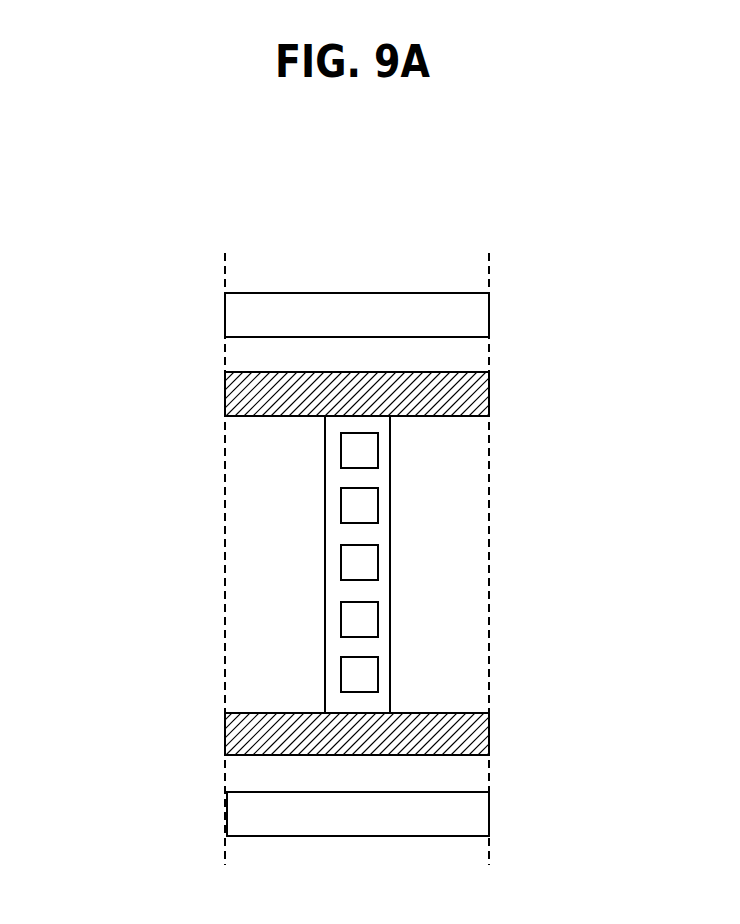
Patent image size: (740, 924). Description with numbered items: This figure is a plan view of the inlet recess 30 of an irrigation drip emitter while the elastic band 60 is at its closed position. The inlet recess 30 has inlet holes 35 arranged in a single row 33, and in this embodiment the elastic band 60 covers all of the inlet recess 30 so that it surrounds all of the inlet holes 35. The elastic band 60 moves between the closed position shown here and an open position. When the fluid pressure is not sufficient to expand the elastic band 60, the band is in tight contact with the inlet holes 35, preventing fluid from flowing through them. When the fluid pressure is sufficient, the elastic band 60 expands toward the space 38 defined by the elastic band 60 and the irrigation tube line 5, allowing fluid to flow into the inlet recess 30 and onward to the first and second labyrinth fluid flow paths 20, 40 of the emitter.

The inlet recess 30 is at (362, 192).
The space 38 is at (442, 354).
The single row 33 is at (391, 511).
The inlet holes 35 is at (380, 610).
The elastic band 60 is at (478, 733).
The irrigation tube line 5 is at (463, 820).
The first labyrinth fluid flow path 20 is at (73, 522).
The second labyrinth fluid flow path 40 is at (653, 513).